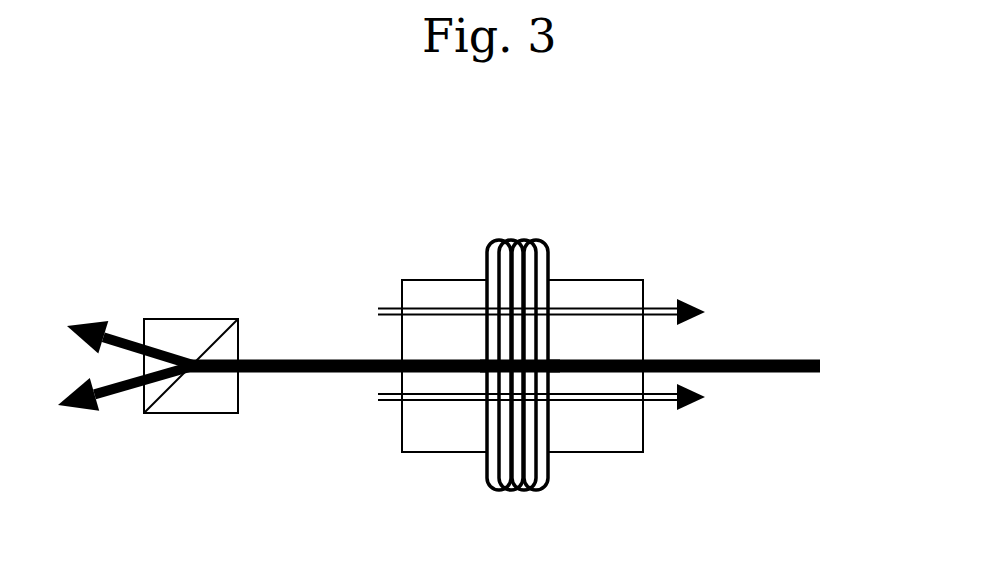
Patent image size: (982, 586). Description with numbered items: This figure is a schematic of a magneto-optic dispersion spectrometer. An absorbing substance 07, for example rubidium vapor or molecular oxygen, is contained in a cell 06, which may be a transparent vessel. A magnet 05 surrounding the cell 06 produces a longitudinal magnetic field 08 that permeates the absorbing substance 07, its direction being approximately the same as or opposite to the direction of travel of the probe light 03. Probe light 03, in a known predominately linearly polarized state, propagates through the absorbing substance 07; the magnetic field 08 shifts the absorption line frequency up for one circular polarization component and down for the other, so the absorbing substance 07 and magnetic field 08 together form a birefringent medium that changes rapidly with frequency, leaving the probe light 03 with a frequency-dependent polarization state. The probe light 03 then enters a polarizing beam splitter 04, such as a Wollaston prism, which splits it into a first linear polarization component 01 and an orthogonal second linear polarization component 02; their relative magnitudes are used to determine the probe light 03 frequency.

The first linear polarization component 01 is at (93, 306).
The second linear polarization component 02 is at (103, 434).
The probe light 03 is at (755, 355).
The polarizing beam splitter 04 is at (187, 313).
The magnet 05 is at (512, 230).
The cell 06 is at (608, 458).
The absorbing substance 07 is at (448, 438).
The longitudinal magnetic field 08 is at (606, 300).